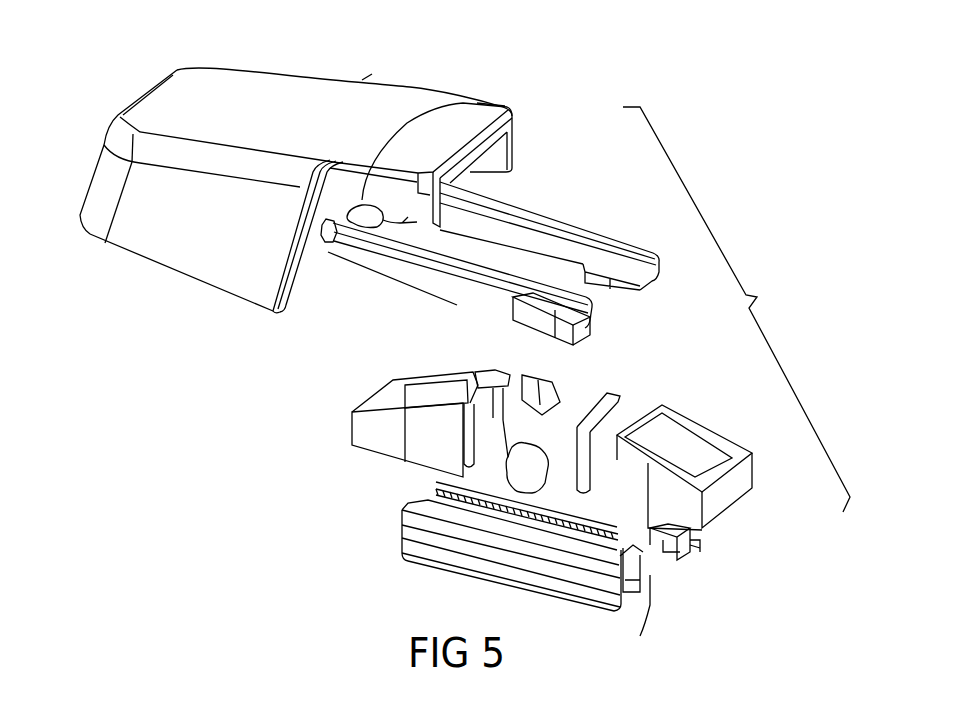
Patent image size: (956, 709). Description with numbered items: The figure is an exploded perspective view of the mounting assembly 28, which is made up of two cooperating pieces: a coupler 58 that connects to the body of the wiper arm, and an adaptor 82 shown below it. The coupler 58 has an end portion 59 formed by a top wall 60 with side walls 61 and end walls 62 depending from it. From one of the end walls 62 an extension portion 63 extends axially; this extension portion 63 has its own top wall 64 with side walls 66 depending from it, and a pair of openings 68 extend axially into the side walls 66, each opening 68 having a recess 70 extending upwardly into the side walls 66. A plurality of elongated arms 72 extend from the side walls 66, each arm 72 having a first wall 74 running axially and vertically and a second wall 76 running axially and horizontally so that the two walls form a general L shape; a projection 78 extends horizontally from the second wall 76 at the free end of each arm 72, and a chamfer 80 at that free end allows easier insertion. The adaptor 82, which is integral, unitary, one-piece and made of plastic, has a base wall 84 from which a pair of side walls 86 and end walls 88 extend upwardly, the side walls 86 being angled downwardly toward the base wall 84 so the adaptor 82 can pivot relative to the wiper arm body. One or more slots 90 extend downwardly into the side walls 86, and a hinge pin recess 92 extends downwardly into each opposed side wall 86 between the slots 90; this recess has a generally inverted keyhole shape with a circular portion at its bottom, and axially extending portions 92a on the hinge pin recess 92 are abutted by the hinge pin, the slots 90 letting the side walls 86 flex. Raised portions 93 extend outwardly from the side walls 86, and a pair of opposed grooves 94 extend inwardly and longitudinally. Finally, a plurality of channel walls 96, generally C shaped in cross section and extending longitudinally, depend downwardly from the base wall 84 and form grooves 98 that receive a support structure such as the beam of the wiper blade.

The mounting assembly 28 is at (736, 309).
The coupler 58 is at (363, 80).
The end portion 59 is at (178, 68).
The top wall 60 is at (318, 124).
The side walls 61 is at (203, 257).
The end walls 62 is at (118, 115).
The extension portion 63 is at (460, 98).
The top wall 64 is at (473, 152).
The side walls 66 is at (513, 147).
The openings 68 is at (324, 243).
The recess 70 is at (463, 100).
The elongated arms 72 is at (565, 222).
The first wall 74 is at (623, 247).
The second wall 76 is at (490, 215).
The projection 78 is at (593, 290).
The chamfer 80 is at (627, 285).
The adaptor 82 is at (400, 558).
The base wall 84 is at (660, 558).
The side walls 86 is at (430, 375).
The end walls 88 is at (388, 400).
The slots 90 is at (410, 508).
The hinge pin recess 92 is at (470, 470).
The hook 92a is at (513, 405).
The raised portions 93 is at (417, 448).
The grooves 94 is at (555, 470).
The channel walls 96 is at (700, 542).
The grooves 98 is at (690, 550).